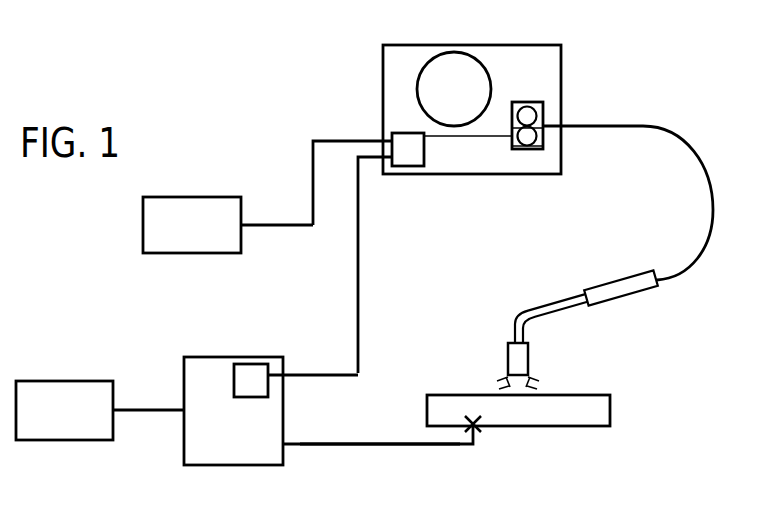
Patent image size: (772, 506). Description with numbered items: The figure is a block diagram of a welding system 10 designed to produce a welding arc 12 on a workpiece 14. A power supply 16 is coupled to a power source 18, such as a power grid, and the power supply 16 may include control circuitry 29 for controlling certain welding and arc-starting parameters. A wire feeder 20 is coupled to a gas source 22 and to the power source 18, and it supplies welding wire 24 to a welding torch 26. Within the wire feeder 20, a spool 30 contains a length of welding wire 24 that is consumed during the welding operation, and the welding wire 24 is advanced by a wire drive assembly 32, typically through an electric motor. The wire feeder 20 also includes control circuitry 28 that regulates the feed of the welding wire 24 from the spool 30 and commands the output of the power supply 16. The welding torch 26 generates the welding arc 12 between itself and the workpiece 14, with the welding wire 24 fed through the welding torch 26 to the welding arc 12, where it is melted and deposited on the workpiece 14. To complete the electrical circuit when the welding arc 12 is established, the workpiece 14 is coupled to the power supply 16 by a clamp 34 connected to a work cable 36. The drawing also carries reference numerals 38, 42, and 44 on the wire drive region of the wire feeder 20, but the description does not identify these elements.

The welding system 10 is at (653, 55).
The welding arc 12 is at (509, 375).
The workpiece 14 is at (611, 413).
The power supply 16 is at (240, 357).
The power source 18 is at (64, 381).
The wire feeder 20 is at (473, 45).
The gas source 22 is at (191, 197).
The welding wire 24 is at (553, 123).
The welding torch 26 is at (615, 276).
The control circuitry 28 is at (425, 150).
The control circuitry 29 is at (250, 363).
The spool 30 is at (426, 62).
The wire drive assembly 32 is at (541, 150).
The clamp 34 is at (478, 430).
The work cable 36 is at (381, 445).
The welding wire 38 is at (514, 150).
The feed motor 42 is at (526, 150).
The drive roll 44 is at (529, 102).